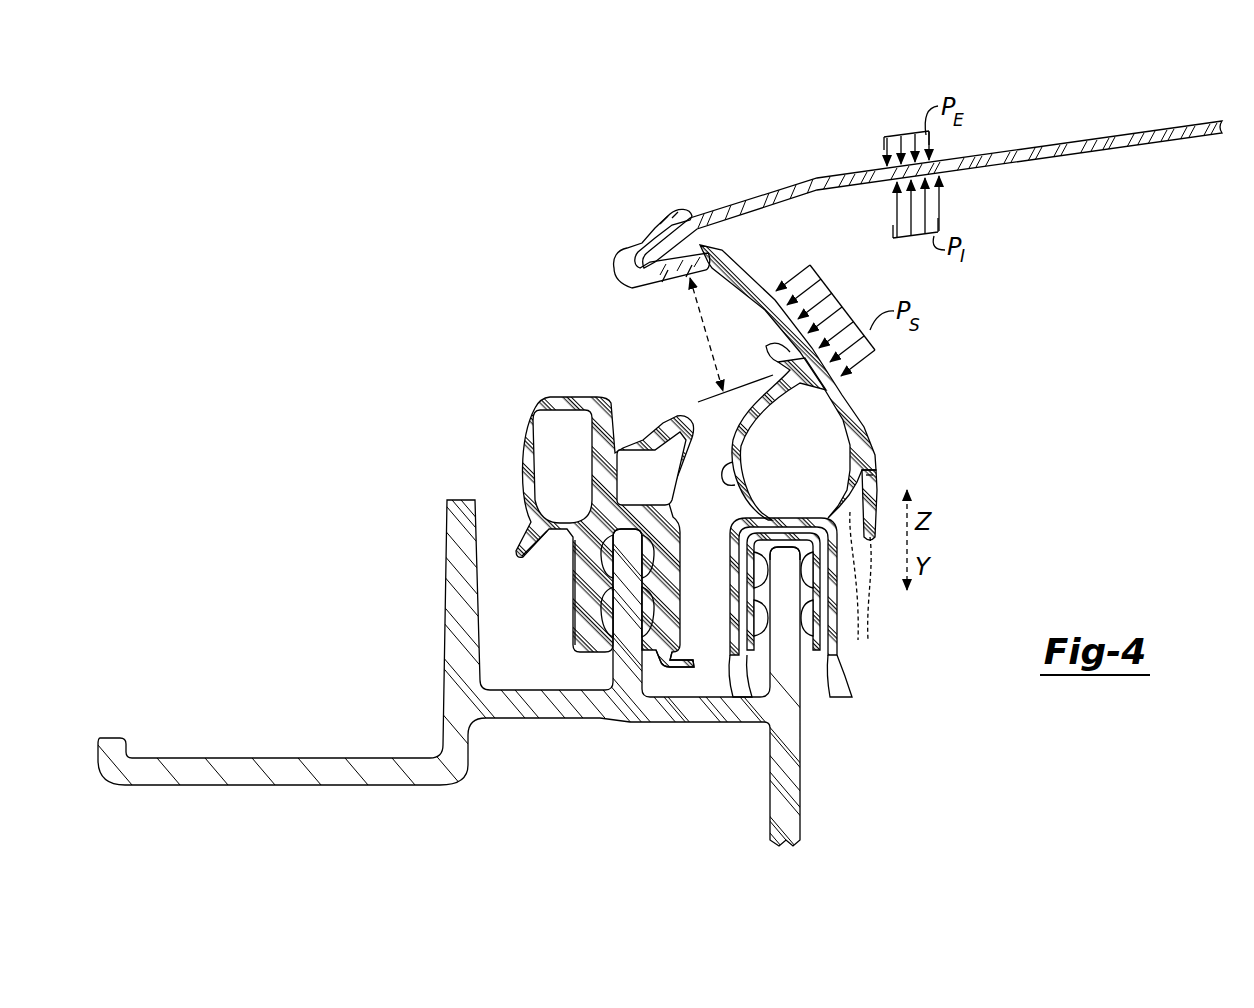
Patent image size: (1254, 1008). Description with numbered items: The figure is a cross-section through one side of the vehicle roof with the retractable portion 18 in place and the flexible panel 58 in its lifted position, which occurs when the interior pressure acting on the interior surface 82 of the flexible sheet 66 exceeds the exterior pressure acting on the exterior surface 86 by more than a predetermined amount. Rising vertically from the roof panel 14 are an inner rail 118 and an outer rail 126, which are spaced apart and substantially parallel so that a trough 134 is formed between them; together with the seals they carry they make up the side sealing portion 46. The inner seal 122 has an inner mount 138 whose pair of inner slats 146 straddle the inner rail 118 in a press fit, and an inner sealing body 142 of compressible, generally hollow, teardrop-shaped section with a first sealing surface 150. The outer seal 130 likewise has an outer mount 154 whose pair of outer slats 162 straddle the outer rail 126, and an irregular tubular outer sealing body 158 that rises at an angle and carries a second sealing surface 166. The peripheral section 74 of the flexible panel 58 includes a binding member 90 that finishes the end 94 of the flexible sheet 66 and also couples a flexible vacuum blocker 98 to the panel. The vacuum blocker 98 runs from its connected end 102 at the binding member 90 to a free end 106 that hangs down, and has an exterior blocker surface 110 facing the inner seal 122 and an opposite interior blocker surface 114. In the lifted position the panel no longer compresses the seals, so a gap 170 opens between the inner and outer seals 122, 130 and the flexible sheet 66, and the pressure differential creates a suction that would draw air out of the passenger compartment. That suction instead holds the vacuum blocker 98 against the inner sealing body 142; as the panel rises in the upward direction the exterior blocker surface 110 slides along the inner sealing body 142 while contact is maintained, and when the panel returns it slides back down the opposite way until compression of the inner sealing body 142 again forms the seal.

The roof panel 14 is at (268, 745).
The retractable portion 18 is at (1185, 96).
The side sealing portion 46 is at (495, 396).
The flexible panel 58 is at (1169, 147).
The flexible sheet 66 is at (1133, 131).
The peripheral section 74 is at (817, 177).
The interior surface 82 is at (1055, 158).
The exterior surface 86 is at (1068, 145).
The binding member 90 is at (616, 250).
The end of the flexible sheet 94 is at (641, 262).
The vacuum blocker 98 is at (877, 480).
The connected end 102 is at (652, 282).
The free end 106 is at (869, 578).
The exterior blocker surface 110 is at (806, 591).
The interior blocker surface 114 is at (868, 405).
The inner rail 118 is at (803, 705).
The inner seal 122 is at (744, 473).
The outer rail 126 is at (625, 640).
The outer seal 130 is at (545, 524).
The trough 134 is at (680, 700).
The inner mount 138 is at (762, 538).
The inner sealing body 142 is at (864, 460).
The inner slats 146 is at (738, 662).
The first sealing surface 150 is at (767, 345).
The outer mount 154 is at (588, 565).
The outer sealing body 158 is at (605, 478).
The outer slats 162 is at (672, 658).
The second sealing surface 166 is at (640, 440).
The gap 170 is at (700, 318).